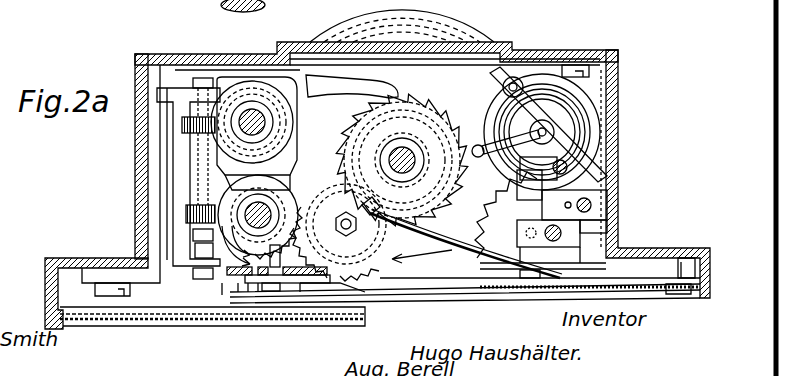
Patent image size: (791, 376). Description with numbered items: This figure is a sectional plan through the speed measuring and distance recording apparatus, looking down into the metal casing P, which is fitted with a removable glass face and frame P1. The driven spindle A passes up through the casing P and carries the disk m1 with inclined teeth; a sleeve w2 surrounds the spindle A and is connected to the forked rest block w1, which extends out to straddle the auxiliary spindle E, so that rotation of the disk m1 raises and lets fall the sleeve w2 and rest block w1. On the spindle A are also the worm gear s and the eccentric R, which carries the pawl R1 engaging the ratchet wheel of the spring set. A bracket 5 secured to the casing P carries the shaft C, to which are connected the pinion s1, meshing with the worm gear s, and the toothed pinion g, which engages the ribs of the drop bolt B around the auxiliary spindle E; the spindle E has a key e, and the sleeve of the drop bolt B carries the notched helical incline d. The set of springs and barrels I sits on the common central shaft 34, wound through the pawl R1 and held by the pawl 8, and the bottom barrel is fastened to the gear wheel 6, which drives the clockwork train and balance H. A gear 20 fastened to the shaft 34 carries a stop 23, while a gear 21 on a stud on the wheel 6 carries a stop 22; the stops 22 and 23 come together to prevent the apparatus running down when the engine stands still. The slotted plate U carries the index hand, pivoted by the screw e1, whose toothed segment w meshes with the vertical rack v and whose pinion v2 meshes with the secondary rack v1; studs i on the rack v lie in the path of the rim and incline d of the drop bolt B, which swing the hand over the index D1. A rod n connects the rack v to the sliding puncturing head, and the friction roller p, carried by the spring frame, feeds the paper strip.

The metal casing P is at (377, 185).
The set of springs and their barrels I is at (406, 102).
The disk m1 is at (230, 110).
The spindle A is at (222, 5).
The eccentric R is at (262, 119).
The forked rest block w1 is at (280, 178).
The pawl R1 is at (352, 86).
The shaft C is at (190, 153).
The worm gear s is at (202, 124).
The pinion s1 is at (182, 125).
The sleeve w2 is at (203, 169).
The helical incline d is at (200, 206).
The bracket 5 is at (160, 218).
The toothed pinion g is at (175, 225).
The auxiliary spindle E is at (262, 220).
The key e is at (282, 229).
The drop bolt B is at (346, 224).
The stop 22 is at (346, 224).
The gear 21 is at (337, 259).
The gear 20 is at (427, 123).
The stop 23 is at (396, 160).
The central shaft 34 is at (403, 148).
The pawl 8 is at (466, 225).
The gear wheel 6 is at (422, 271).
The friction roller p is at (430, 266).
The glass face and frame P1 is at (200, 303).
The studs i is at (298, 259).
The slotted metal plate U is at (238, 283).
The vertical rack v is at (225, 295).
The rod n is at (240, 292).
The toothed segment w is at (249, 292).
The secondary rack v1 is at (259, 292).
The screw e1 is at (270, 292).
The pinion v2 is at (301, 292).
The balance H is at (588, 132).
The index D1 is at (622, 285).